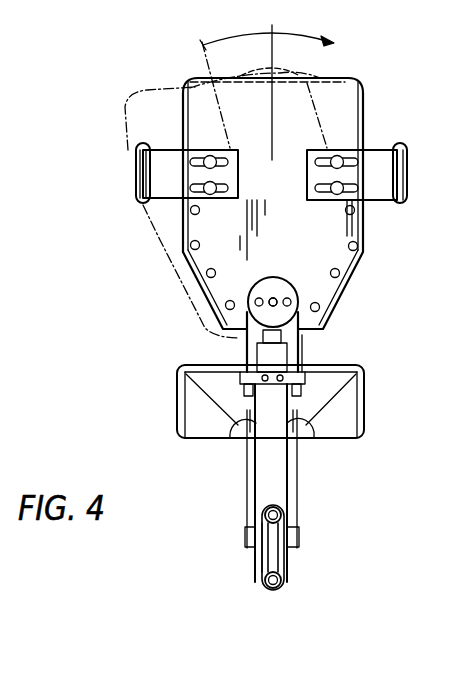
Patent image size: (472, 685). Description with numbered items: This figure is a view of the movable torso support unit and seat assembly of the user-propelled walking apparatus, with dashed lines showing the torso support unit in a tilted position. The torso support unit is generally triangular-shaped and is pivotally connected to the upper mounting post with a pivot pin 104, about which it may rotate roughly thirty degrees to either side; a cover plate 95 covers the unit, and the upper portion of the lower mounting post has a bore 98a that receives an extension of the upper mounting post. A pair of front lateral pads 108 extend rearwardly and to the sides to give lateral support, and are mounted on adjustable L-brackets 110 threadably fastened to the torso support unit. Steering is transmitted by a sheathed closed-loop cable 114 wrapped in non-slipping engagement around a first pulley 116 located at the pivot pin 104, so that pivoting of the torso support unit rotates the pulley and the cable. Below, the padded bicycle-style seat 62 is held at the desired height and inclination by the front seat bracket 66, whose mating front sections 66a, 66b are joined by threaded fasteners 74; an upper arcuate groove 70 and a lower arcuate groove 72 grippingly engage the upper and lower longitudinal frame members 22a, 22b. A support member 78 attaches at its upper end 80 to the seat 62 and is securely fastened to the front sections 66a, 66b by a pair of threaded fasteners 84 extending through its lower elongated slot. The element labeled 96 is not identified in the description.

The upper longitudinal frame member 22a is at (268, 506).
The lower longitudinal frame member 22b is at (267, 586).
The seat 62 is at (185, 398).
The front seat bracket 66 is at (284, 555).
The front section 66a is at (267, 552).
The front section 66b is at (284, 565).
The upper arcuate groove 70 is at (247, 530).
The lower arcuate groove 72 is at (262, 573).
The threaded fasteners 74 is at (192, 230).
The support member 78 is at (298, 457).
The upper end 80 is at (243, 433).
The threaded fasteners 84 is at (297, 530).
The cover plate 95 is at (363, 229).
The mounting block 96 is at (257, 353).
The bore 98a is at (316, 412).
The pivot pin 104 is at (297, 289).
The front lateral pads 108 is at (136, 177).
The adjustable L-brackets 110 is at (180, 148).
The sheathed closed-loop cable 114 is at (304, 333).
The first pulley 116 is at (278, 284).